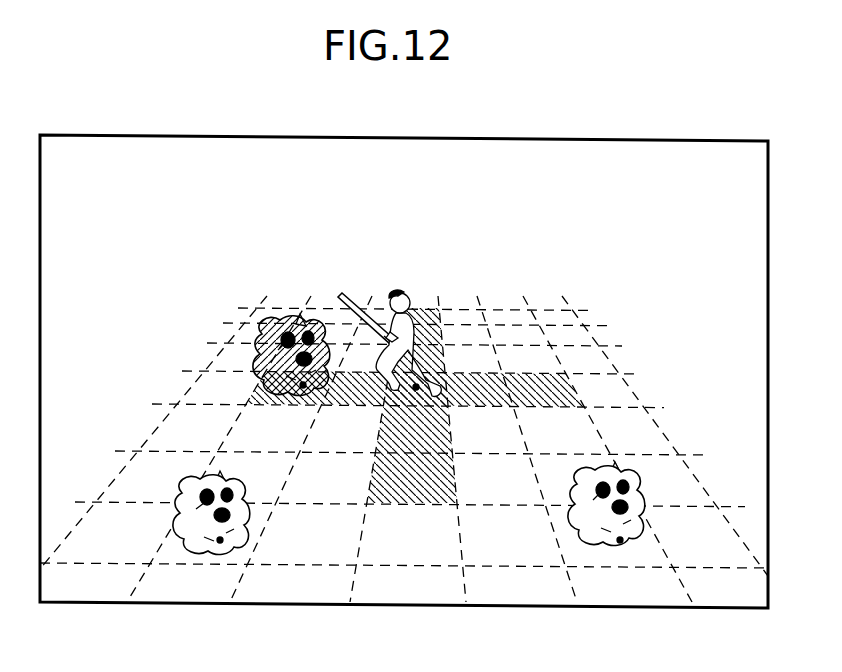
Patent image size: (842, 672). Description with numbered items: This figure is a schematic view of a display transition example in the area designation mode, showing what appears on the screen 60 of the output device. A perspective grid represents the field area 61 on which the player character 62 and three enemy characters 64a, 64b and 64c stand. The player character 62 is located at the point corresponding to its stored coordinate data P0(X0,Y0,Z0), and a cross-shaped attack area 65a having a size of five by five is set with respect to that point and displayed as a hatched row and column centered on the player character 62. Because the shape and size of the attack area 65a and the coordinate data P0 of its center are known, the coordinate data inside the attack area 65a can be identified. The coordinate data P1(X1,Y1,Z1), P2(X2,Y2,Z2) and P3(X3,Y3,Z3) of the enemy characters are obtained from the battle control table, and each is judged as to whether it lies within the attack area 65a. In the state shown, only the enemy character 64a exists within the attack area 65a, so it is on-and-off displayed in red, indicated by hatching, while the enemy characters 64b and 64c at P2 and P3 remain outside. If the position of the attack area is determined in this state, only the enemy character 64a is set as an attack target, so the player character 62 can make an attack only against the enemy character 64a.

The screen 60 is at (636, 137).
The field area 61 is at (736, 544).
The player character 62 is at (394, 293).
The enemy character 64a is at (258, 326).
The enemy character 64b is at (178, 490).
The enemy character 64c is at (628, 484).
The attack area 65a is at (558, 383).
The coordinate data of the player character P0 is at (417, 386).
The coordinate data of enemy character P1 is at (303, 385).
The coordinate data of enemy character P2 is at (220, 540).
The coordinate data of enemy character P3 is at (620, 540).